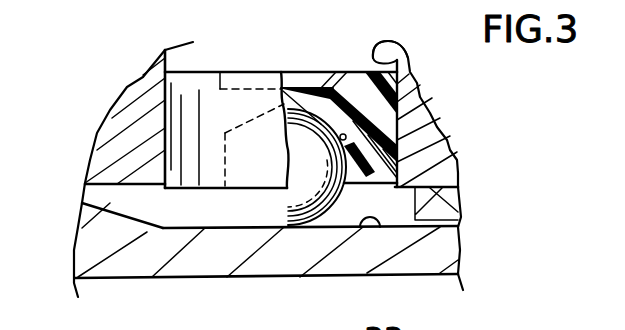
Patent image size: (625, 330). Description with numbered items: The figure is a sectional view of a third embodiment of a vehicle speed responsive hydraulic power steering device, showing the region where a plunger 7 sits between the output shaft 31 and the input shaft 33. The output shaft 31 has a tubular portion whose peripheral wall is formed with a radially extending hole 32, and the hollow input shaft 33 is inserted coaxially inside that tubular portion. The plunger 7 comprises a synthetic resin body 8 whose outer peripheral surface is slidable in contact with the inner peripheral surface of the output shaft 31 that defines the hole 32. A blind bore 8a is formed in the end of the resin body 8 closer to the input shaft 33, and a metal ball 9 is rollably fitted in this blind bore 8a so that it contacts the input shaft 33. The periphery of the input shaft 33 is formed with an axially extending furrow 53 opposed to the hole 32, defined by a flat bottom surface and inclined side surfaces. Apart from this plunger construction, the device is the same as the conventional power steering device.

The plunger 7 is at (190, 173).
The synthetic resin body 8 is at (367, 110).
The blind bore 8a is at (345, 144).
The metal ball 9 is at (285, 210).
The output shaft 31 is at (130, 142).
The hole 32 is at (367, 42).
The input shaft 33 is at (440, 245).
The furrow 53 is at (380, 220).